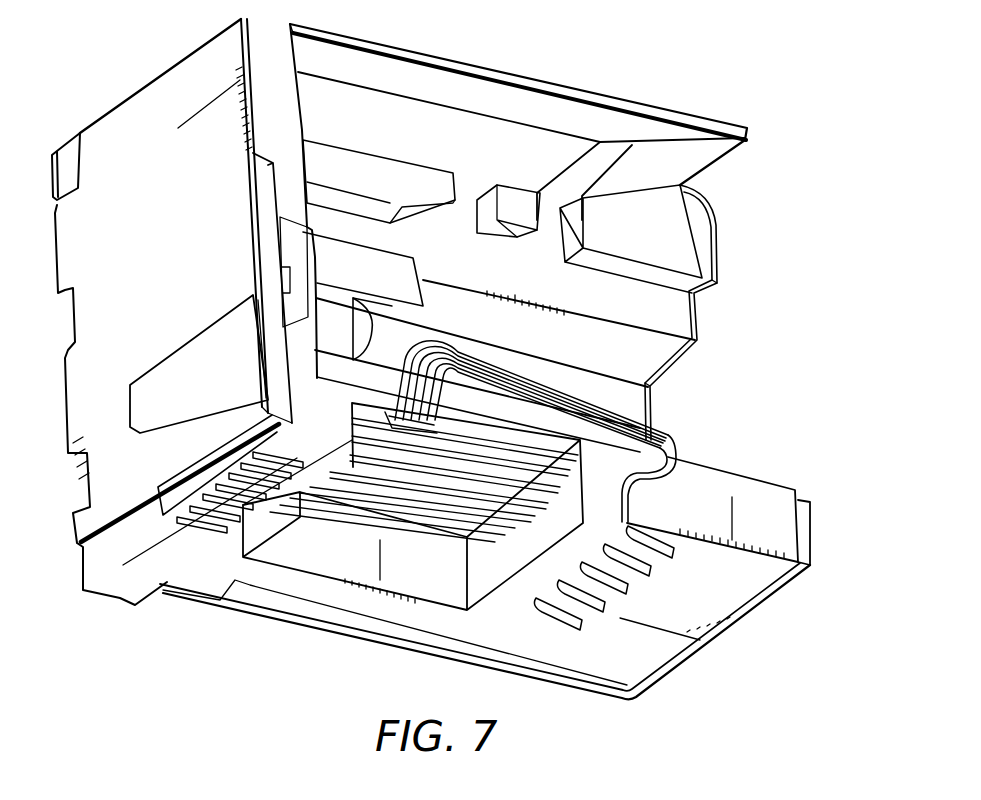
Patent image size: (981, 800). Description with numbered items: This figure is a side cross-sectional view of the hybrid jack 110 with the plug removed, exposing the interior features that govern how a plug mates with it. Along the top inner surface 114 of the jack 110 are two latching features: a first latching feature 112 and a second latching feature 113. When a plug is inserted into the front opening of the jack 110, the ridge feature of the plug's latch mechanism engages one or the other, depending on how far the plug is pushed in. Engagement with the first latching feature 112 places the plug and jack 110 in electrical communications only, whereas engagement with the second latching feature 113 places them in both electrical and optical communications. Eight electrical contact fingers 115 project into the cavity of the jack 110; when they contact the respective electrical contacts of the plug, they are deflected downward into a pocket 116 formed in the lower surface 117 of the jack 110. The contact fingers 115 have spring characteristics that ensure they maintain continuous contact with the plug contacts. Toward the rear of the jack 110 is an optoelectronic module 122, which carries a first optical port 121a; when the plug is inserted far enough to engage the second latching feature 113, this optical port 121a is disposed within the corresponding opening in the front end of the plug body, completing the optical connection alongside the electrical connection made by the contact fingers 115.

The hybrid RJ-45 jack 110 is at (392, 45).
The first latching feature 112 is at (540, 243).
The second latching feature 113 is at (467, 207).
The top inner surface 114 is at (663, 272).
The electrical contact fingers 115 is at (667, 450).
The pocket 116 is at (318, 558).
The lower surface 117 is at (760, 517).
The first optical port 121a is at (366, 315).
The optoelectronic module 122 is at (270, 210).